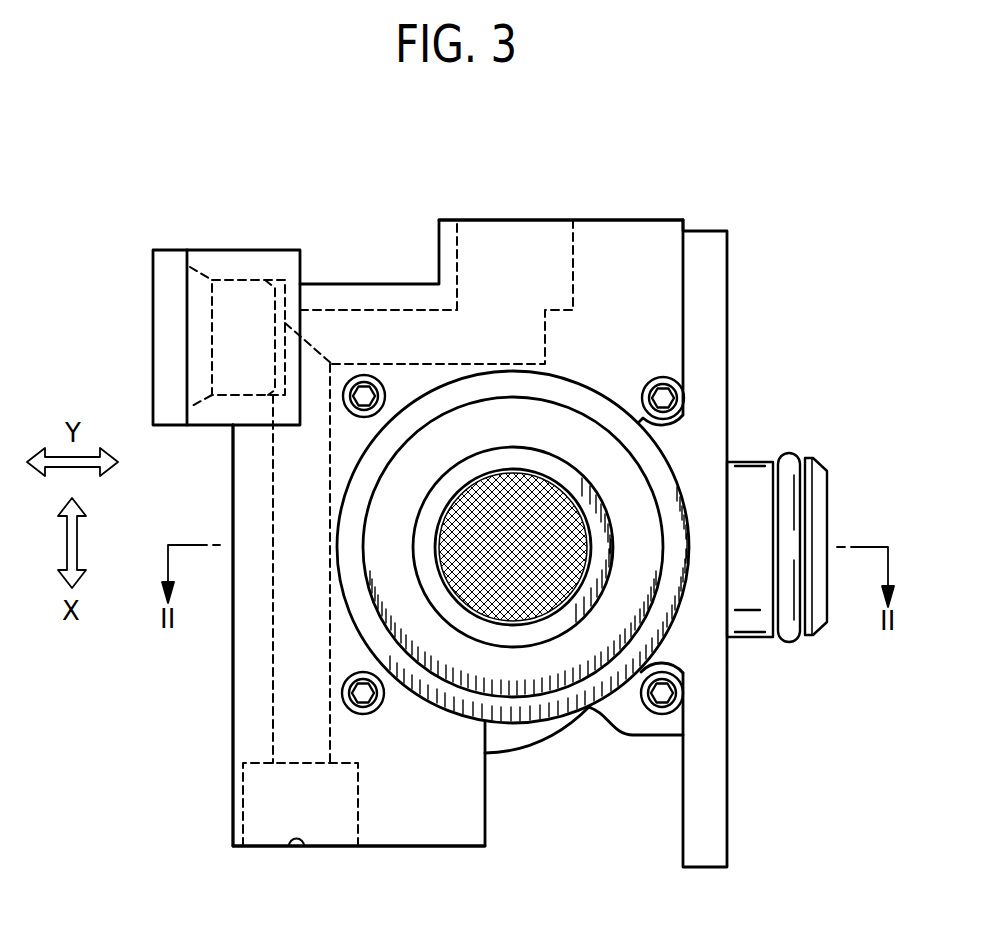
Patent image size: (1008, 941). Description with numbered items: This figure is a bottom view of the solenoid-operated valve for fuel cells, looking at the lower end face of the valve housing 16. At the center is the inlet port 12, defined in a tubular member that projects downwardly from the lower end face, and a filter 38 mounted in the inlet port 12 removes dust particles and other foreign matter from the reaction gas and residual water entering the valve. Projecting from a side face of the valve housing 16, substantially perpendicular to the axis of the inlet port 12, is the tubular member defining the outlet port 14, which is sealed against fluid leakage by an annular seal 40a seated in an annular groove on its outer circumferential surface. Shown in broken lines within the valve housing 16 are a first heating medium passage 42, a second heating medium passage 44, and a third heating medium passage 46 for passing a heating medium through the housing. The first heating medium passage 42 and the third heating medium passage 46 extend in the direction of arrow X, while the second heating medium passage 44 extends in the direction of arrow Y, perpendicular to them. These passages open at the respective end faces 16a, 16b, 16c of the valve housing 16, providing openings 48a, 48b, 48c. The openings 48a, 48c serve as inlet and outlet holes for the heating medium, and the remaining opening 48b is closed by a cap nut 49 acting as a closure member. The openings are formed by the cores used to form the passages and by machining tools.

The inlet port 12 is at (545, 478).
The outlet port 14 is at (830, 513).
The valve housing 16 is at (702, 836).
The end face 16a is at (410, 848).
The end face 16b is at (233, 497).
The end face 16c is at (658, 220).
The filter 38 is at (530, 600).
The annular seal 40a is at (795, 630).
The first heating medium passage 42 is at (272, 717).
The second heating medium passage 44 is at (350, 322).
The third heating medium passage 46 is at (573, 265).
The opening 48a is at (296, 850).
The opening 48b is at (210, 310).
The opening 48c is at (480, 220).
The cap nut 49 is at (163, 298).